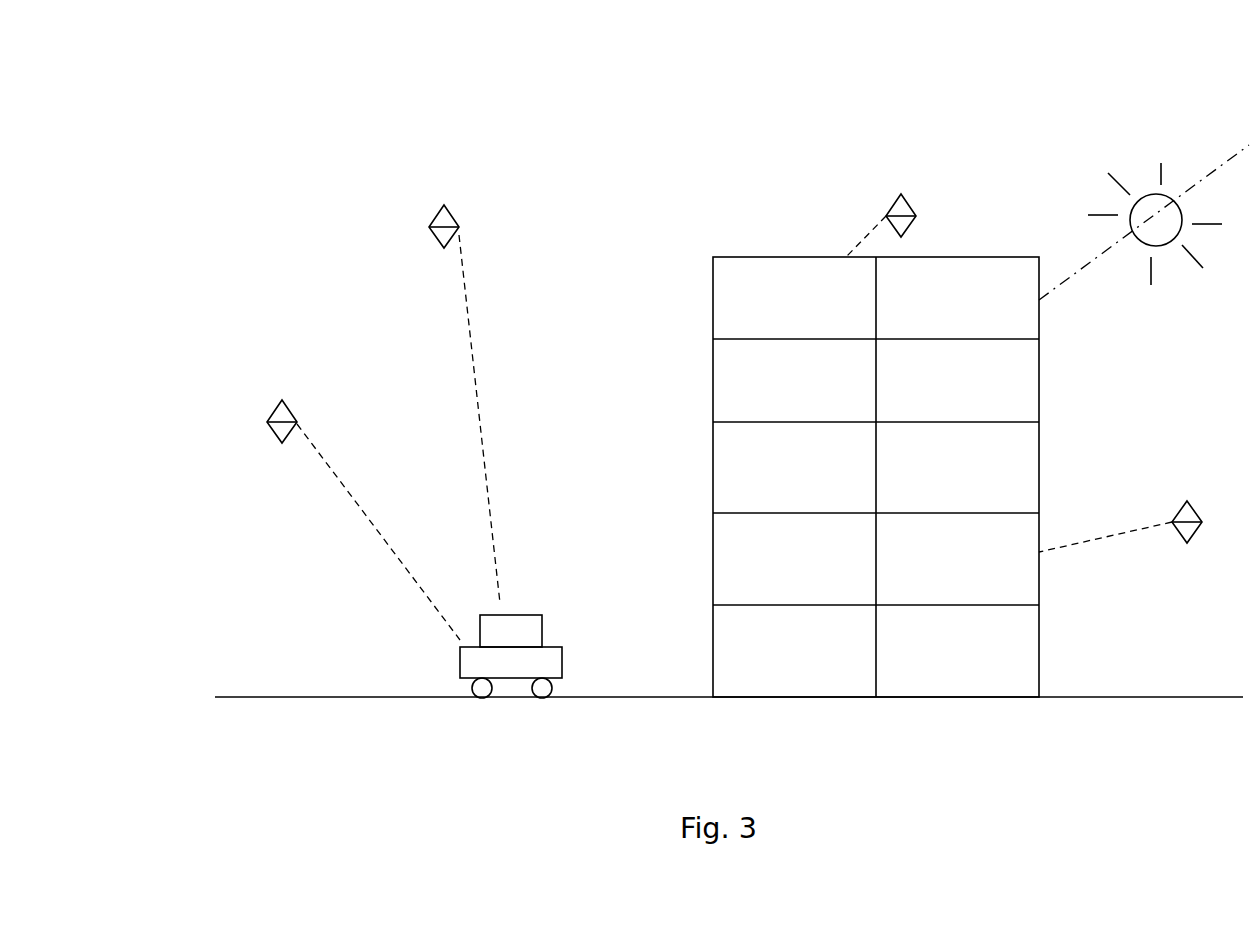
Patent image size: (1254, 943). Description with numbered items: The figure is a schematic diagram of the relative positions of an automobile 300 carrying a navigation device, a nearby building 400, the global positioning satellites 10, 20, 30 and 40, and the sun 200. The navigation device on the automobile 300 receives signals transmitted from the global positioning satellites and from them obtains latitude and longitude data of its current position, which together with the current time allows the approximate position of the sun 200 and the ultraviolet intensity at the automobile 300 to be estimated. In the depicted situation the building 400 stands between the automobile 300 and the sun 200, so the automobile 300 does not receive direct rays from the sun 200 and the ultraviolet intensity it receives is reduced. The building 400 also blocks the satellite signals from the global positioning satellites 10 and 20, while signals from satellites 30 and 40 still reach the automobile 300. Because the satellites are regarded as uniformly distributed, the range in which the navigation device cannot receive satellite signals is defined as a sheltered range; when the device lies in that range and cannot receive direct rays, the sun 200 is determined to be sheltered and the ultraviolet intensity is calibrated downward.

The global positioning satellite 10 is at (903, 194).
The global positioning satellite 20 is at (1189, 500).
The global positioning satellite 30 is at (428, 218).
The global positioning satellite 40 is at (265, 412).
The sun 200 is at (1138, 193).
The automobile 300 is at (460, 660).
The building 400 is at (732, 257).